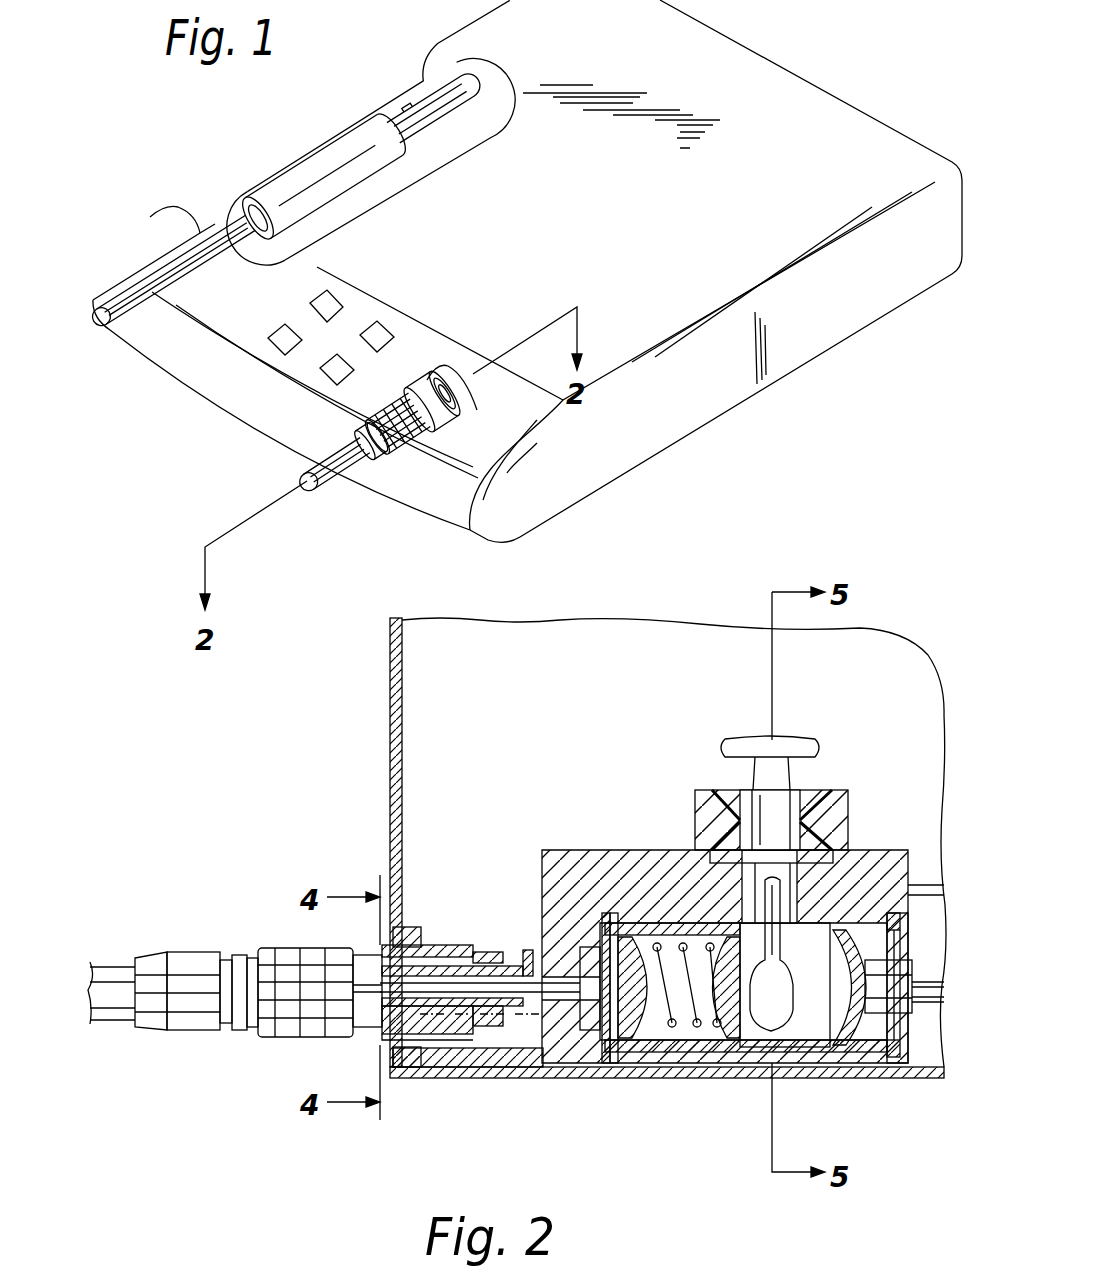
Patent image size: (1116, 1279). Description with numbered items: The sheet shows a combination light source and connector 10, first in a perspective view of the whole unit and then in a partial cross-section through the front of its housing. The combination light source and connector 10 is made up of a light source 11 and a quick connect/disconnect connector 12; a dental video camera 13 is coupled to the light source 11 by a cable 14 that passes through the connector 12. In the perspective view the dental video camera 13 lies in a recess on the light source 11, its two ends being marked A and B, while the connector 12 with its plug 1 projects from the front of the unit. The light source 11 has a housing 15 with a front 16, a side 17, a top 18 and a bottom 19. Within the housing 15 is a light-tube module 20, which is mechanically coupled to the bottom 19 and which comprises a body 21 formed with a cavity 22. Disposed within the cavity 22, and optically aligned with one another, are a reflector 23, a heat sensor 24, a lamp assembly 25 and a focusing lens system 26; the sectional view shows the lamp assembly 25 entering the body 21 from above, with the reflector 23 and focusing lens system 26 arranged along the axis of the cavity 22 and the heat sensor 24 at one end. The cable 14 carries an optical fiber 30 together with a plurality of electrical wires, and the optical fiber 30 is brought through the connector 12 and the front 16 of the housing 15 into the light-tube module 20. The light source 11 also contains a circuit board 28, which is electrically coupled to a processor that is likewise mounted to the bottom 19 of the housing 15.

In FIG. 2, the electrical connector 1 is at (333, 1060).
In FIG. 1, the combination light source and connector 10 is at (218, 180).
In FIG. 1, the light source 11 is at (707, 393).
In FIG. 2, the light source 11 is at (388, 775).
In FIG. 1, the quick connect/disconnect connector 12 is at (408, 447).
In FIG. 1, the dental video camera 13 is at (365, 153).
In FIG. 2, the dental video camera 13 is at (110, 983).
In FIG. 1, the cable 14 is at (333, 463).
In FIG. 2, the housing 15 is at (425, 690).
In FIG. 2, the front 16 is at (388, 857).
In FIG. 2, the side 17 is at (520, 744).
In FIG. 1, the top 18 is at (692, 201).
In FIG. 2, the bottom 19 is at (715, 1075).
In FIG. 2, the light-tube module 20 is at (623, 848).
In FIG. 2, the body 21 is at (575, 870).
In FIG. 2, the cavity 22 is at (875, 1052).
In FIG. 2, the reflector 23 is at (847, 925).
In FIG. 2, the heat sensor 24 is at (893, 990).
In FIG. 2, the lamp assembly 25 is at (830, 788).
In FIG. 2, the focusing lens system 26 is at (660, 1025).
In FIG. 2, the circuit board 28 is at (522, 948).
In FIG. 2, the optical fiber 30 is at (437, 1040).
In FIG. 1, the probe end A is at (438, 117).
In FIG. 1, the probe end B is at (118, 300).